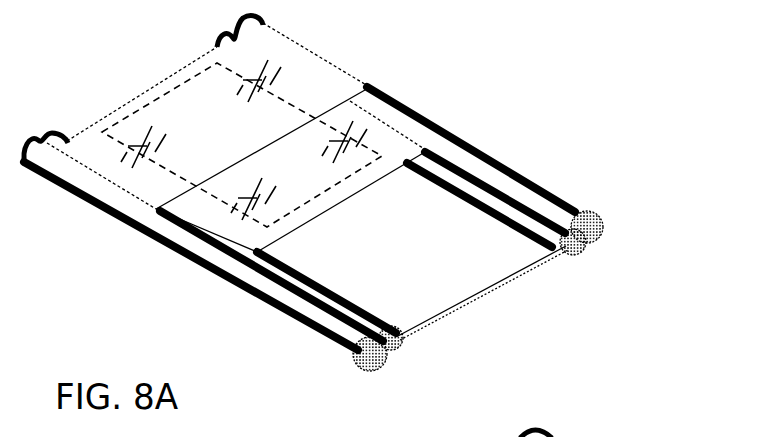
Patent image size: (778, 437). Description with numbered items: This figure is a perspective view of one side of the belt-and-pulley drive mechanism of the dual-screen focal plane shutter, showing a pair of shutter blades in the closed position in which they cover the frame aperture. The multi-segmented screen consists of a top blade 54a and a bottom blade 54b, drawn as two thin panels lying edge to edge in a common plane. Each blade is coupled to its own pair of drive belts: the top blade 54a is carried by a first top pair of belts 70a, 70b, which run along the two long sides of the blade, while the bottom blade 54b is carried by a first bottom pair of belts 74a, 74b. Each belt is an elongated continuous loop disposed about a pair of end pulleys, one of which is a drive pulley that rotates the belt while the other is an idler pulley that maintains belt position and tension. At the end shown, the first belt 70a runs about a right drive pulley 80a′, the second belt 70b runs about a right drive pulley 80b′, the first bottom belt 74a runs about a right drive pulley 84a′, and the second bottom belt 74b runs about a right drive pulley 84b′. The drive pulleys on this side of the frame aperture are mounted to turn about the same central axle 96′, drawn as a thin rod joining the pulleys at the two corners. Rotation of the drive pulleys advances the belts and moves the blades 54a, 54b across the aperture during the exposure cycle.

The top blade 54a is at (327, 63).
The bottom blade 54b is at (337, 205).
The first belt 70a is at (498, 162).
The second belt 70b is at (288, 325).
The first belt 74a is at (513, 229).
The second belt 74b is at (348, 302).
The right drive pulley 80a′ is at (602, 251).
The right drive pulley 80b′ is at (368, 378).
The right drive pulley 84a′ is at (568, 256).
The right drive pulley 84b′ is at (407, 342).
The central axle 96′ is at (485, 299).